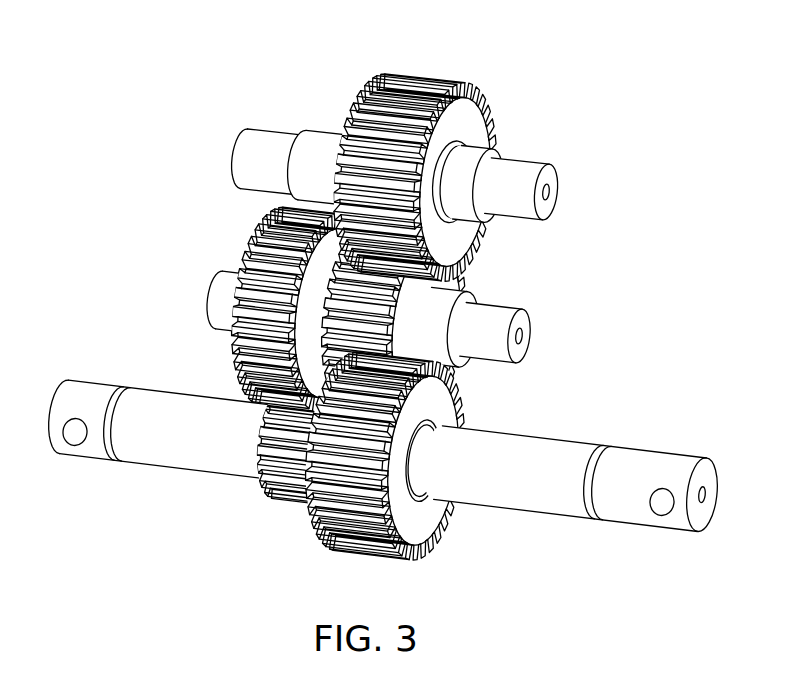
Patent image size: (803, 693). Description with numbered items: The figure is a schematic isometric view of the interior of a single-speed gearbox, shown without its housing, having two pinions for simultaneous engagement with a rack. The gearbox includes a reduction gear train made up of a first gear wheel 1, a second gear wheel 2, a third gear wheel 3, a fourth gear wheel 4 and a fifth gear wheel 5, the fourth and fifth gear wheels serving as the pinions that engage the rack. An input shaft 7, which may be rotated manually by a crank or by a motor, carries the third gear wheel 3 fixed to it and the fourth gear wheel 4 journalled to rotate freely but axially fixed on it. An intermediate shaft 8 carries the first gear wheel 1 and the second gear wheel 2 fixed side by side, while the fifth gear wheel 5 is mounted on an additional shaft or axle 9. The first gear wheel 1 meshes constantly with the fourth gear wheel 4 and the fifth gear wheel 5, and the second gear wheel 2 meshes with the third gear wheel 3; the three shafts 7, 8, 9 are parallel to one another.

The first gear wheel 1 is at (406, 321).
The second gear wheel 2 is at (299, 303).
The third gear wheel 3 is at (292, 459).
The fourth gear wheel 4 is at (320, 520).
The fifth gear wheel 5 is at (421, 100).
The input shaft 7 is at (385, 481).
The intermediate shaft 8 is at (361, 309).
The additional shaft or axle 9 is at (396, 157).